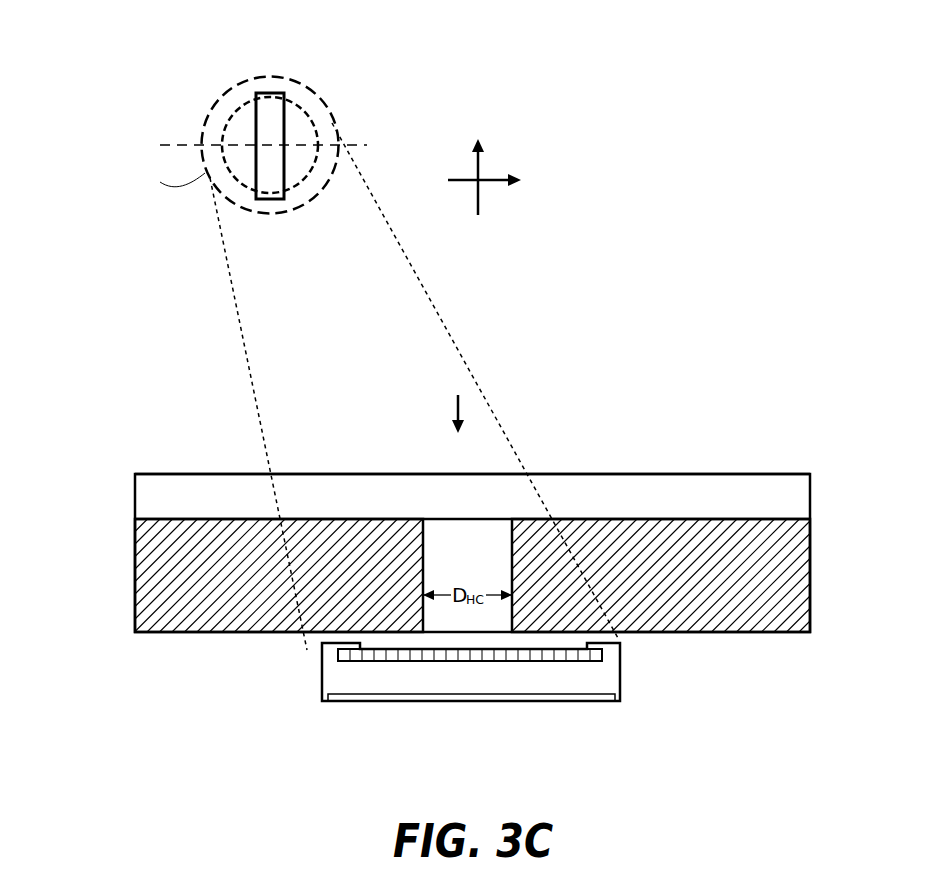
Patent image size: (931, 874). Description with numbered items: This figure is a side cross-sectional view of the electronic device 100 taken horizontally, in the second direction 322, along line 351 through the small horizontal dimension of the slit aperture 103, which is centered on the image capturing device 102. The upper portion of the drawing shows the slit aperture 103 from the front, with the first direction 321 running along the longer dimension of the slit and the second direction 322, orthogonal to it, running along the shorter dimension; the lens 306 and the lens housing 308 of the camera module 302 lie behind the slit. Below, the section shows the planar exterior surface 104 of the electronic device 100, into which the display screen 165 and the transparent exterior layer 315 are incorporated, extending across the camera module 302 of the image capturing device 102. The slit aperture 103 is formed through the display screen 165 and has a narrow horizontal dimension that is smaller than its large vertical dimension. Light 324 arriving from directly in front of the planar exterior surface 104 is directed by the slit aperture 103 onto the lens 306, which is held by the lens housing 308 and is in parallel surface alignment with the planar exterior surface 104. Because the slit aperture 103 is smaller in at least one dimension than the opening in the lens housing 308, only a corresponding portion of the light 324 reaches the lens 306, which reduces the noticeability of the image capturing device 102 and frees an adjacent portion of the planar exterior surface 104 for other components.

The electronic device 100 is at (122, 506).
The image capturing device 102 is at (210, 71).
The slit aperture 103 is at (275, 125).
The planar exterior surface 104 is at (209, 470).
The display screen 165 is at (221, 586).
The camera module 302 is at (558, 690).
The lens 306 is at (298, 157).
The lens housing 308 is at (370, 386).
The transparent exterior layer 315 is at (753, 506).
The first direction 321 is at (480, 193).
The second direction 322 is at (502, 177).
The light 324 is at (465, 407).
The line 351 is at (190, 143).